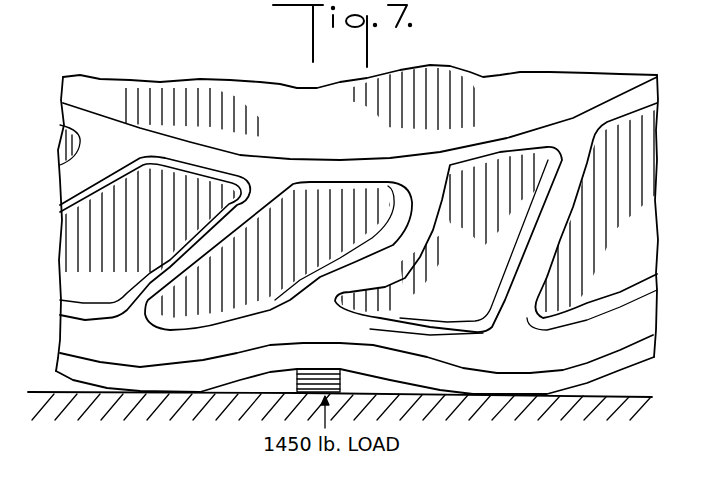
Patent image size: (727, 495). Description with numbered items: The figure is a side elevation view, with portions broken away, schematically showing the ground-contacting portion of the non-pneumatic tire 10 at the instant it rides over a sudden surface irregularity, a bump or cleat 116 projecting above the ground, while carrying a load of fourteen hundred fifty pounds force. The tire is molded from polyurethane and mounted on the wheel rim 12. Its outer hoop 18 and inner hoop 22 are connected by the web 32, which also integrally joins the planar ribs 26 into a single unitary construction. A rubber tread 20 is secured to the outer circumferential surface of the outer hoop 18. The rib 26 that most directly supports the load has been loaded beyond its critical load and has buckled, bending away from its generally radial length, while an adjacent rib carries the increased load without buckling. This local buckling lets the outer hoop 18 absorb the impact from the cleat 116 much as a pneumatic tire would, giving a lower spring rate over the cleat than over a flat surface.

The non-pneumatic tire 10 is at (150, 63).
The wheel rim 12 is at (540, 82).
The inner hoop 22 is at (360, 182).
The web 32 is at (299, 255).
The first ribs 26 is at (197, 252).
The cleat 116 is at (318, 376).
The rubber tread 20 is at (95, 377).
The outer hoop 18 is at (147, 377).